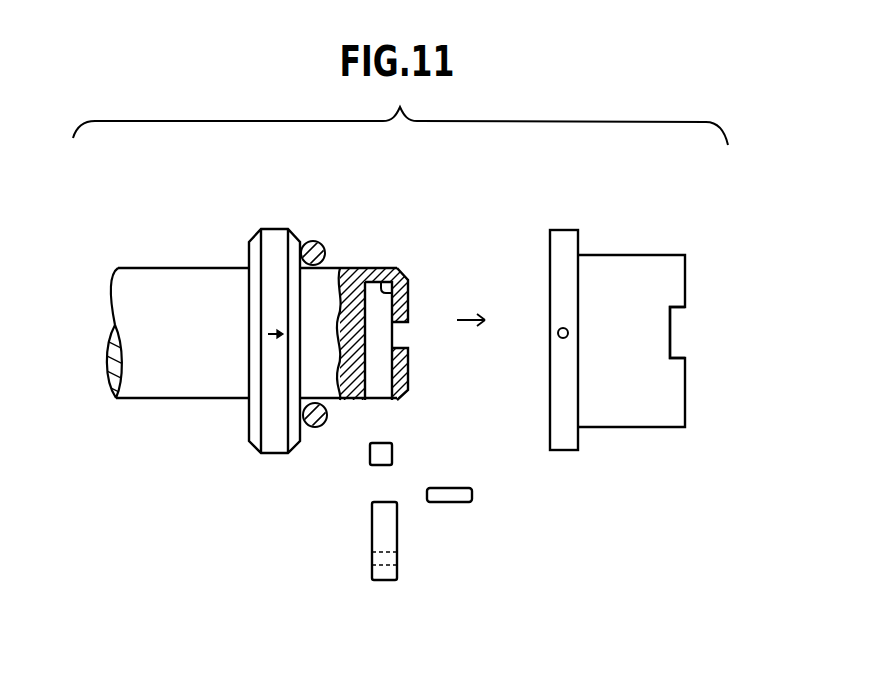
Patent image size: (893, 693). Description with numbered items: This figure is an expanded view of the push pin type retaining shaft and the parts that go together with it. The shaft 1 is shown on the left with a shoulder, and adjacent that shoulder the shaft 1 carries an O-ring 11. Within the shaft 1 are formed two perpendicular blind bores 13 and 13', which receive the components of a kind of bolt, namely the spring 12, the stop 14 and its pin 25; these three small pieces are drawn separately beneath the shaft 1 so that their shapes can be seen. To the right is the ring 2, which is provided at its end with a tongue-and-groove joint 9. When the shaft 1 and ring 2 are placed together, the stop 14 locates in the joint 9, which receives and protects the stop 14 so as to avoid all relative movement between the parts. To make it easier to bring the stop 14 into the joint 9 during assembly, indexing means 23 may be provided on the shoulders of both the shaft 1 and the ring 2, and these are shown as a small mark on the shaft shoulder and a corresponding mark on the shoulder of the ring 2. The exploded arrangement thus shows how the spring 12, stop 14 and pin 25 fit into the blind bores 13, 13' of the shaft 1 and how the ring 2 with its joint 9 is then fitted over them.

The shaft 1 is at (152, 287).
The ring 2 is at (657, 400).
The tongue-and-groove joint 9 is at (679, 322).
The O-ring 11 is at (315, 241).
The spring 12 is at (395, 444).
The blind bore 13 is at (360, 304).
The blind bore 13' is at (464, 350).
The stop 14 is at (372, 530).
The indexing means 23 is at (273, 338).
The pin 25 is at (460, 503).